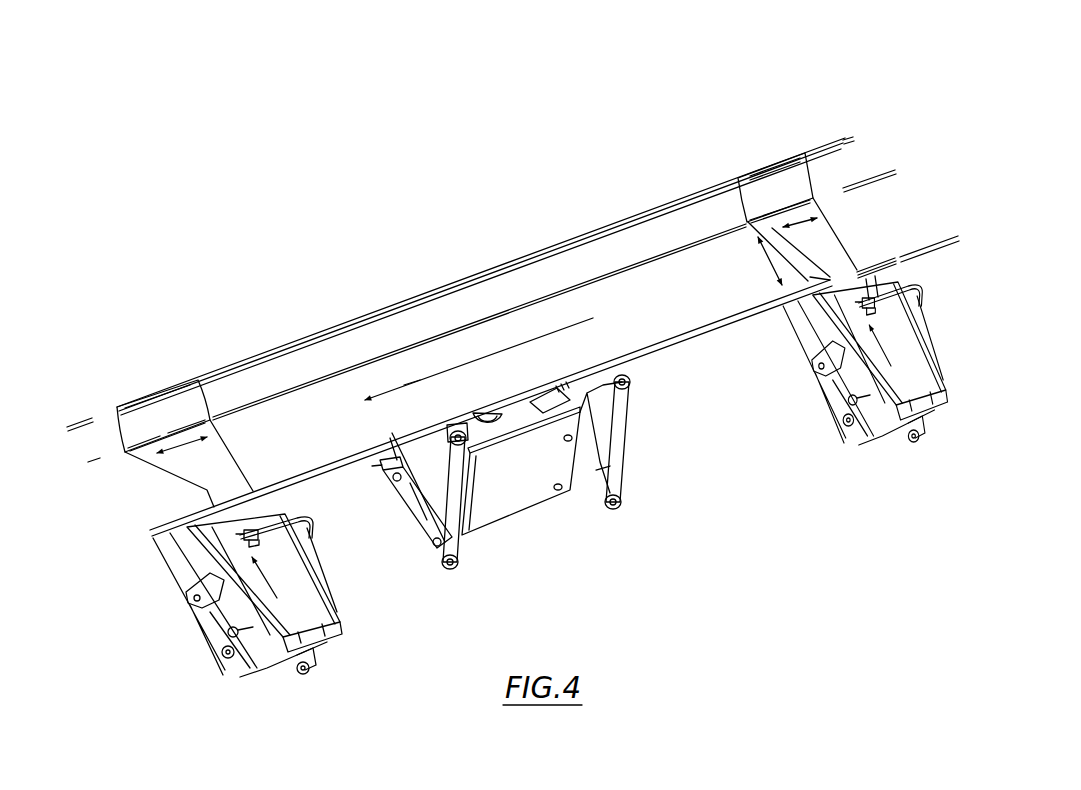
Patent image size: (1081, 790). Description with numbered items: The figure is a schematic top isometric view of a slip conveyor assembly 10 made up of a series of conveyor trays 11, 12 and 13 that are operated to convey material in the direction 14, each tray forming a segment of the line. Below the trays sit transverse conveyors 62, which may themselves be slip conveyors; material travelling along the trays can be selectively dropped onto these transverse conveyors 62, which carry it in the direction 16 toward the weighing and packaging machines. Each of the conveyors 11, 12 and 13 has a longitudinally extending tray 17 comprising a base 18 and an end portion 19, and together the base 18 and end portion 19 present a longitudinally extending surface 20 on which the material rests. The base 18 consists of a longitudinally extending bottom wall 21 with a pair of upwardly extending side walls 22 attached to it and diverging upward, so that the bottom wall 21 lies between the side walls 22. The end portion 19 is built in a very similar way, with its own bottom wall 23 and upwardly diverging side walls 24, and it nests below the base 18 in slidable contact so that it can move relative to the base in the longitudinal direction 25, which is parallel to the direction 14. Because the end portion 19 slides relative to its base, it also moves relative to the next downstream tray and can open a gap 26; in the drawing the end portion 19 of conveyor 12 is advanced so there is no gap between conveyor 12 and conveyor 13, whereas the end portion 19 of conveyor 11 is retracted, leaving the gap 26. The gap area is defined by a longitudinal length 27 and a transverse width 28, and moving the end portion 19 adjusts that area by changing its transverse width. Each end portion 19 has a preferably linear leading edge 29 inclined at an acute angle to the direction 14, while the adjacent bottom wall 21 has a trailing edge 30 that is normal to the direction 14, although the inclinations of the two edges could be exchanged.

The slip conveyor assembly 10 is at (501, 198).
The conveyor tray 11 is at (858, 131).
The conveyor tray 12 is at (568, 228).
The conveyor tray 13 is at (88, 405).
The conveying direction 14 is at (404, 385).
The transverse conveying direction 16 is at (268, 580).
The longitudinally extending tray 17 is at (298, 276).
The base 18 is at (380, 306).
The end portion 19 is at (174, 381).
The longitudinally extending surface 20 is at (320, 436).
The bottom wall 21 is at (670, 298).
The side walls 22 is at (590, 279).
The bottom wall 23 is at (228, 477).
The side walls 24 is at (183, 424).
The longitudinal direction 25 is at (162, 467).
The gap 26 is at (818, 267).
The longitudinal length 27 is at (812, 226).
The transverse width 28 is at (760, 262).
The leading edge 29 is at (765, 228).
The trailing edge 30 is at (782, 290).
The transverse conveyors 62 is at (352, 624).